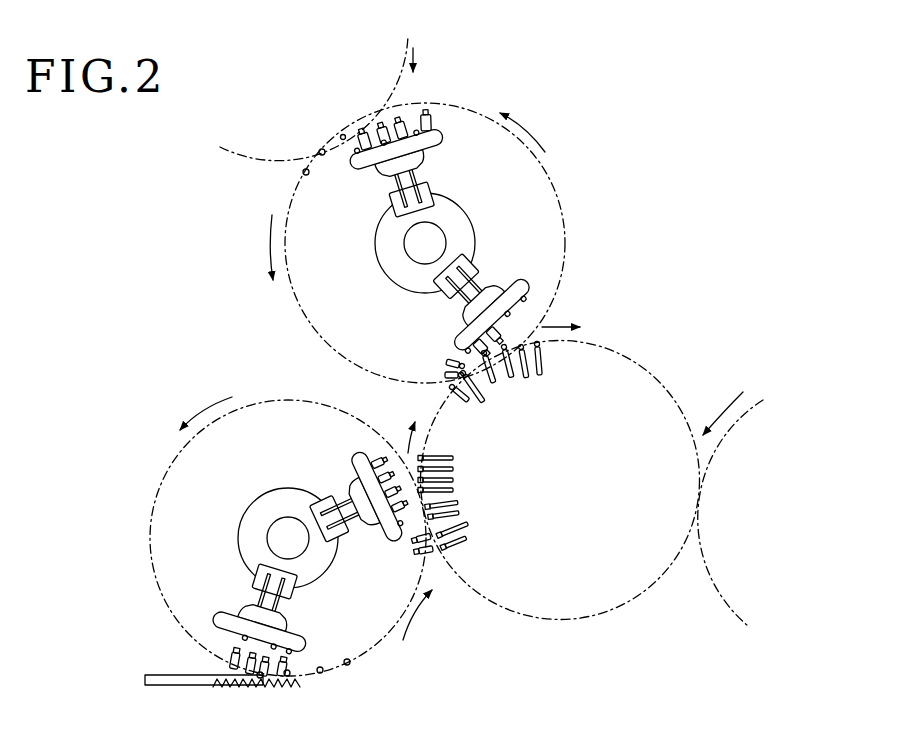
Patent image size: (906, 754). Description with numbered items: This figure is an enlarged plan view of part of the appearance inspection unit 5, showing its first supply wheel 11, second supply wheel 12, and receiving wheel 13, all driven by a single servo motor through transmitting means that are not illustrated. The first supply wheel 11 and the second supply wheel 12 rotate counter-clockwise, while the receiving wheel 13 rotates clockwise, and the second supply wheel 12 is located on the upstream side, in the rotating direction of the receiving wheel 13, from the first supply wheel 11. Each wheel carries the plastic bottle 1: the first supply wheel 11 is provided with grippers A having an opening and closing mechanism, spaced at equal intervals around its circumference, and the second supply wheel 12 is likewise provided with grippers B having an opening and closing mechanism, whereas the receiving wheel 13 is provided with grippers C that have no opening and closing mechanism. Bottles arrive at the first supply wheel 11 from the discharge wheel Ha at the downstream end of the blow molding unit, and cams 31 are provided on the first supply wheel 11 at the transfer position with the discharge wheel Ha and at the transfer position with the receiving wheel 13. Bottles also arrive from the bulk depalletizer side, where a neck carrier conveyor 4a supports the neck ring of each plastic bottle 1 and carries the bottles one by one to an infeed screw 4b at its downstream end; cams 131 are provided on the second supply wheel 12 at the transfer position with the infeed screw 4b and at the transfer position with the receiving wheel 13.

The discharge wheel Ha is at (408, 38).
The appearance inspection unit 5 is at (681, 152).
The first supply wheel 11 is at (583, 200).
The second supply wheel 12 is at (370, 655).
The receiving wheel 13 is at (648, 372).
The cams 31 is at (442, 140).
The cams 131 is at (355, 460).
The plastic bottle 1 is at (310, 176).
The grippers A is at (405, 115).
The grippers B is at (415, 543).
The grippers C is at (543, 353).
The neck carrier conveyor 4a is at (180, 686).
The infeed screw 4b is at (263, 690).